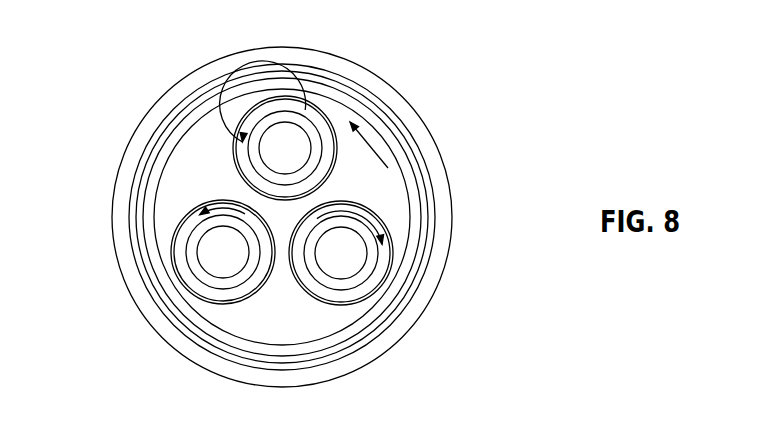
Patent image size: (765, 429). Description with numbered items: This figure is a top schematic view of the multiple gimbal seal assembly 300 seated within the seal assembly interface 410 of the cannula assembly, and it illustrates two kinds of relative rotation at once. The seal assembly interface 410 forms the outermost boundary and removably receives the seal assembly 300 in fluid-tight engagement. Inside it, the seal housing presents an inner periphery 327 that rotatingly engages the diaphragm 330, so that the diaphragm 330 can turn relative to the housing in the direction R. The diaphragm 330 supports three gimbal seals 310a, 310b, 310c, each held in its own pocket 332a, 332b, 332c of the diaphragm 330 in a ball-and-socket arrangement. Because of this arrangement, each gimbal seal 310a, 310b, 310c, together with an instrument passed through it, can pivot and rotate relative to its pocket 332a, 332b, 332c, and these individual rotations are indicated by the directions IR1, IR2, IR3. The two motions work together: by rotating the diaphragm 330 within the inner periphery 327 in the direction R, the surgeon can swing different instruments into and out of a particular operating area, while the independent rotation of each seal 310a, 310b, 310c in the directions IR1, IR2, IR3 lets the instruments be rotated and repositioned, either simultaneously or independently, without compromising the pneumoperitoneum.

The multiple gimbal seal assembly 300 is at (167, 48).
The seal assembly interface 410 is at (385, 338).
The inner periphery 327 is at (393, 122).
The diaphragm 330 is at (393, 287).
The pocket 332b is at (281, 96).
The gimbal seal 310b is at (296, 111).
The direction of rotation IR2 is at (240, 145).
The pocket 332c is at (174, 272).
The gimbal seal 310c is at (183, 242).
The direction of rotation IR3 is at (218, 211).
The pocket 332a is at (392, 257).
The gimbal seal 310a is at (387, 234).
The direction of rotation IR1 is at (362, 214).
The direction of rotation R is at (369, 145).